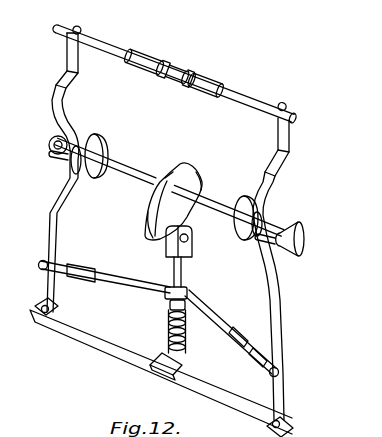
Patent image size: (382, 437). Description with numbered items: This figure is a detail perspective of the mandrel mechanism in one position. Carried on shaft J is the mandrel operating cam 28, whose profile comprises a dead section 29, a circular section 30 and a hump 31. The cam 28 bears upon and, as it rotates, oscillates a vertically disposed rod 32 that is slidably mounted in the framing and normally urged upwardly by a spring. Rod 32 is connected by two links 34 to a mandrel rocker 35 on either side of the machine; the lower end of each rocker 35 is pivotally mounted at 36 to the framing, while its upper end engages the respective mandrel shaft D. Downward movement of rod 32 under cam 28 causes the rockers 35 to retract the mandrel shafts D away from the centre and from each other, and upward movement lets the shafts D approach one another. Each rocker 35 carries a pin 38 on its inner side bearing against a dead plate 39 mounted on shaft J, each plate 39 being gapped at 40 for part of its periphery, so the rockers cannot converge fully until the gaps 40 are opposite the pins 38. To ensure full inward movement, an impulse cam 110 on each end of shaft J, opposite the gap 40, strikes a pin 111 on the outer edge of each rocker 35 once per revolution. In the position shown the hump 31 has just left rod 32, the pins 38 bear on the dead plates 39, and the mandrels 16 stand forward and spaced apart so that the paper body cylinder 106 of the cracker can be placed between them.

The mandrel shaft D is at (102, 45).
The mandrel 16 is at (150, 53).
The paper body cylinder 106 is at (180, 64).
The mandrel rocker 35 is at (57, 87).
The gap 40 is at (109, 149).
The dead plate 39 is at (98, 138).
The pin 38 is at (77, 176).
The impulse cam 110 is at (55, 142).
The pin 111 is at (54, 156).
The shaft J is at (210, 199).
The mandrel operating cam 28 is at (157, 201).
The dead section 29 is at (171, 172).
The circular section 30 is at (203, 176).
The hump 31 is at (147, 228).
The rod 32 is at (170, 307).
The link 34 is at (137, 281).
The pivot 36 is at (283, 420).